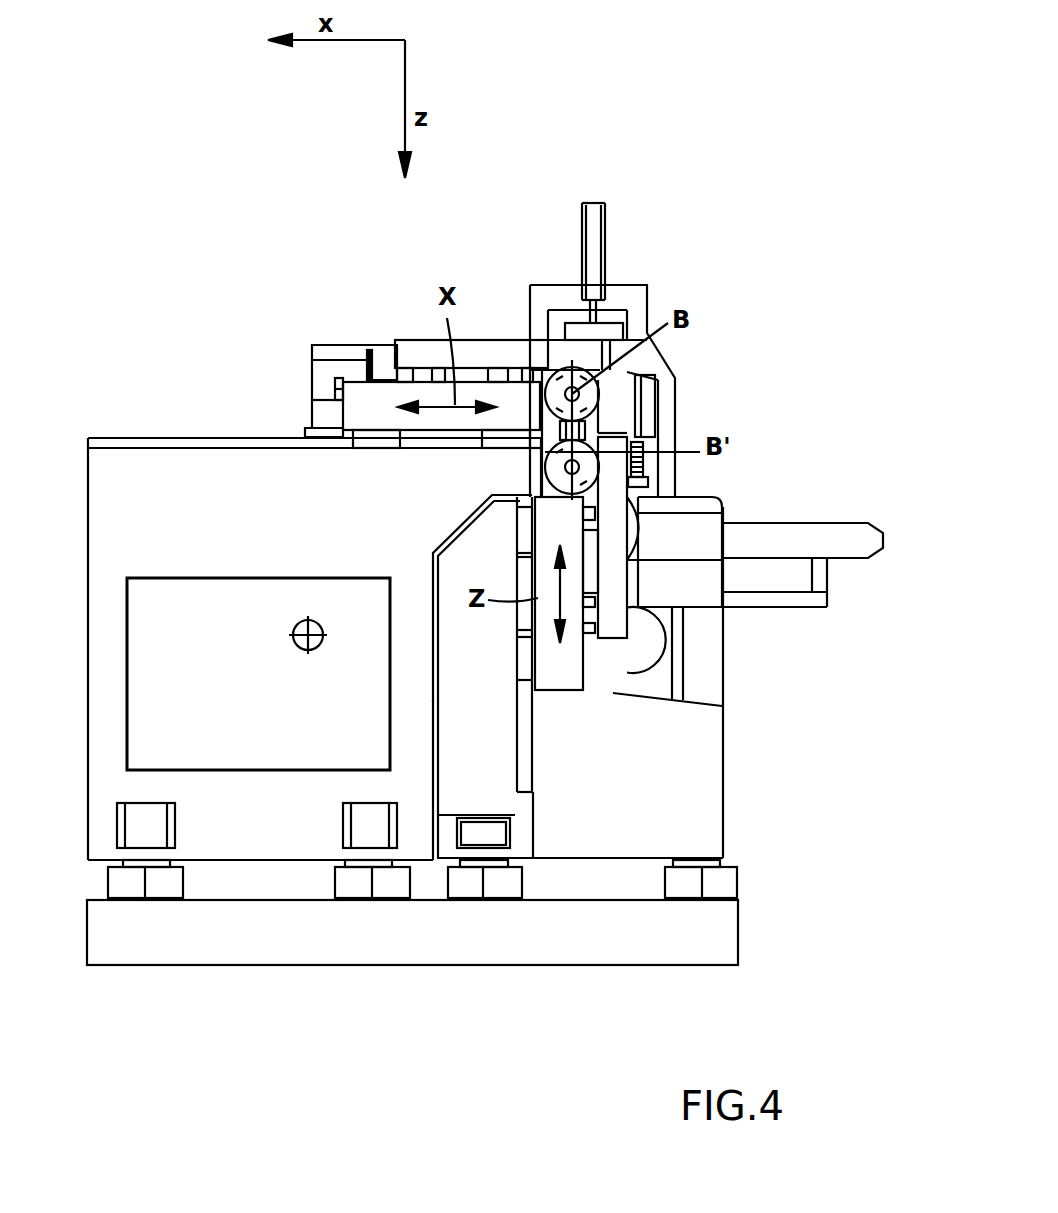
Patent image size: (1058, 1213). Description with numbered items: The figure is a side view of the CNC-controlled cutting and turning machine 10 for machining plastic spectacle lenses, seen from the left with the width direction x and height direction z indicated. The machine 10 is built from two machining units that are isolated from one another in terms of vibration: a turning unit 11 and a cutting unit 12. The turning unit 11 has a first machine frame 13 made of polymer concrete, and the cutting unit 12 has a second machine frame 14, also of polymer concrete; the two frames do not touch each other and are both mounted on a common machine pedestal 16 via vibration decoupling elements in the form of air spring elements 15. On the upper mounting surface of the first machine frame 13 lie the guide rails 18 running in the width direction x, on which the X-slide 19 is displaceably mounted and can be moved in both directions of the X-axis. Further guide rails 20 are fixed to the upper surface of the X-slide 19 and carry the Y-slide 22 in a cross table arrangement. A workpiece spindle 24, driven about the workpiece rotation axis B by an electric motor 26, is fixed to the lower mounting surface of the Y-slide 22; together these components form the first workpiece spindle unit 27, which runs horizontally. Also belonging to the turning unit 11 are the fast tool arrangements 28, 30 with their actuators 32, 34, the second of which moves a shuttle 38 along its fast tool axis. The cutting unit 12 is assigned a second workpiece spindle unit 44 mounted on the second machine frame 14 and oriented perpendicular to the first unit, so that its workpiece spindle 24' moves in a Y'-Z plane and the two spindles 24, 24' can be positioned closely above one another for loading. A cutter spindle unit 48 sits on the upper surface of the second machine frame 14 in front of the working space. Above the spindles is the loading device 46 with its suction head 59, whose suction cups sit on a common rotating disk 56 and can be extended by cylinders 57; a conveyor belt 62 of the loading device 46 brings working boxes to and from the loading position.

The cutting and turning machine 10 is at (554, 180).
The turning unit 11 is at (393, 272).
The cutting unit 12 is at (492, 753).
The first machine frame 13 is at (165, 494).
The second machine frame 14 is at (492, 719).
The air spring elements 15 is at (168, 888).
The machine pedestal 16 is at (602, 948).
The guide rails 18 is at (113, 443).
The X-slide 19 is at (388, 422).
The guide rails 20 is at (418, 380).
The Y-slide 22 is at (474, 352).
The workpiece spindle 24 is at (570, 421).
The workpiece spindle 24' is at (531, 467).
The electric motor 26 is at (582, 377).
The first workpiece spindle unit 27 is at (448, 428).
The first fast tool arrangement 28 is at (385, 340).
The second fast tool arrangement 30 is at (310, 388).
The actuator 32 is at (340, 378).
The actuator 34 is at (322, 413).
The shuttle 38 is at (333, 380).
The second workpiece spindle unit 44 is at (590, 678).
The loading device 46 is at (656, 290).
The cutter spindle unit 48 is at (695, 511).
The rotating disk 56 is at (633, 372).
The cylinders 57 is at (640, 396).
The suction head 59 is at (655, 428).
The conveyor belt 62 is at (812, 522).